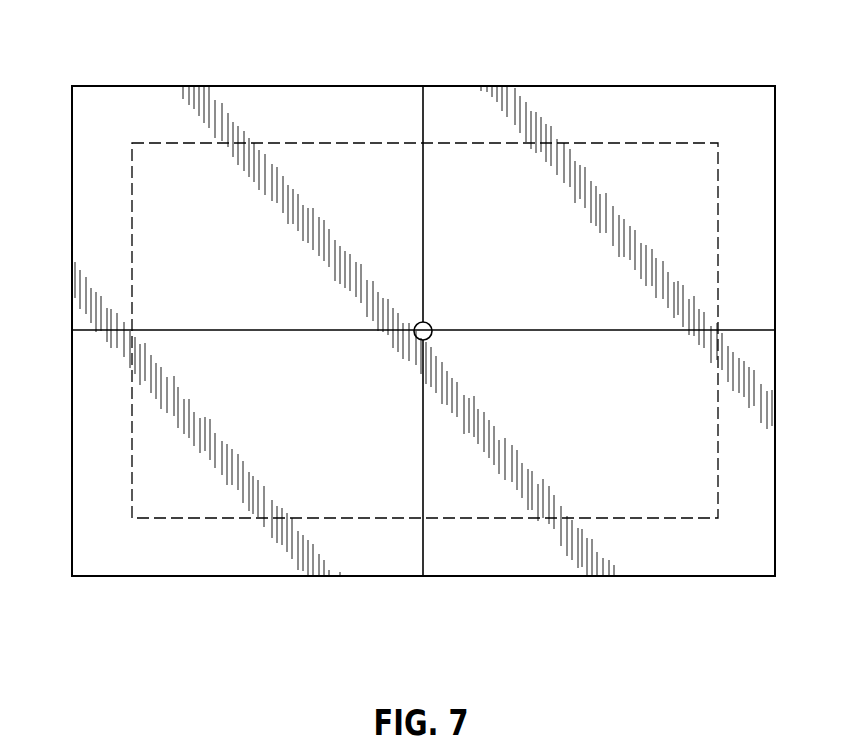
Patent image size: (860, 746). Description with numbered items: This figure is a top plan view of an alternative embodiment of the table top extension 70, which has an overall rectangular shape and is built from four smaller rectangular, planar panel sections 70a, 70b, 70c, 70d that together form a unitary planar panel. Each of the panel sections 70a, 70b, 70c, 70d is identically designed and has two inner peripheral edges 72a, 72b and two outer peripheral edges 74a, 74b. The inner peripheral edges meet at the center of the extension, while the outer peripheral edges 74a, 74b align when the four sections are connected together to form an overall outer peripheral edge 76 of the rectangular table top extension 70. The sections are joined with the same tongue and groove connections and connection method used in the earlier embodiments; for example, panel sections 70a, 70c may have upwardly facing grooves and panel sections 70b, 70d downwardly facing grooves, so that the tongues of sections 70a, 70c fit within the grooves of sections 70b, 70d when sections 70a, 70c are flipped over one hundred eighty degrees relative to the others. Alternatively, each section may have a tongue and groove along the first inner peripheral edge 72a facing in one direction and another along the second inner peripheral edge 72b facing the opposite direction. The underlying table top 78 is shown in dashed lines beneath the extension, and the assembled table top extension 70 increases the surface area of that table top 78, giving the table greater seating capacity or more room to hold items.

The table top extension 70 is at (739, 65).
The planar panel section 70a is at (194, 233).
The planar panel section 70b is at (511, 233).
The planar panel section 70c is at (580, 406).
The planar panel section 70d is at (291, 404).
The first inner peripheral edge 72a is at (424, 110).
The second inner peripheral edge 72b is at (422, 153).
The outer peripheral edge 74a is at (72, 157).
The outer peripheral edge 74b is at (228, 86).
The overall outer peripheral edge 76 is at (721, 578).
The underlying table top 78 is at (718, 245).